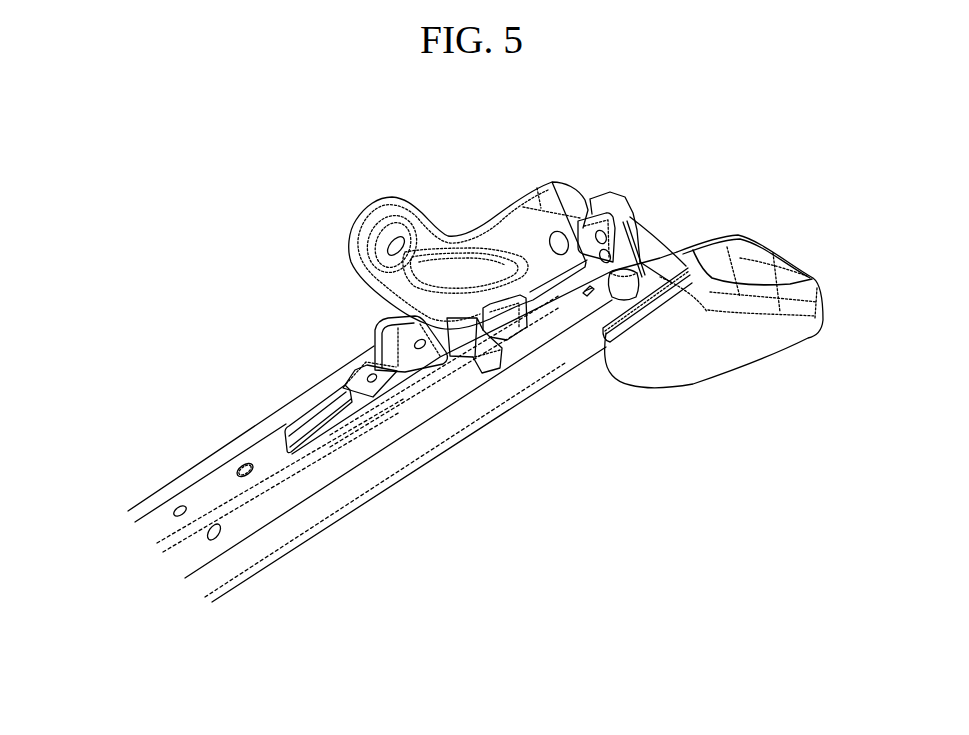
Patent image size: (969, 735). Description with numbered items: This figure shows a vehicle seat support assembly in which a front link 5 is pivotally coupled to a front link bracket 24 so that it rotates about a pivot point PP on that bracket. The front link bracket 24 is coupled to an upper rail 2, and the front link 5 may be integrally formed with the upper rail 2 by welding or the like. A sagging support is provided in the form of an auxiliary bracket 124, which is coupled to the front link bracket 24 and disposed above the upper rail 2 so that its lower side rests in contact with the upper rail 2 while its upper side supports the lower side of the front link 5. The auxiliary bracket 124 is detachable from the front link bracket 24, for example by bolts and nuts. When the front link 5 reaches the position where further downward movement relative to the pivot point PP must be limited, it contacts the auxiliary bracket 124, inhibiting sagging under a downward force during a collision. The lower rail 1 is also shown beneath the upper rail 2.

The lower rail 1 is at (387, 467).
The upper rail 2 is at (213, 487).
The front link 5 is at (528, 203).
The front link bracket 24 is at (360, 333).
The auxiliary bracket 124 is at (465, 345).
The pivot point PP is at (600, 240).